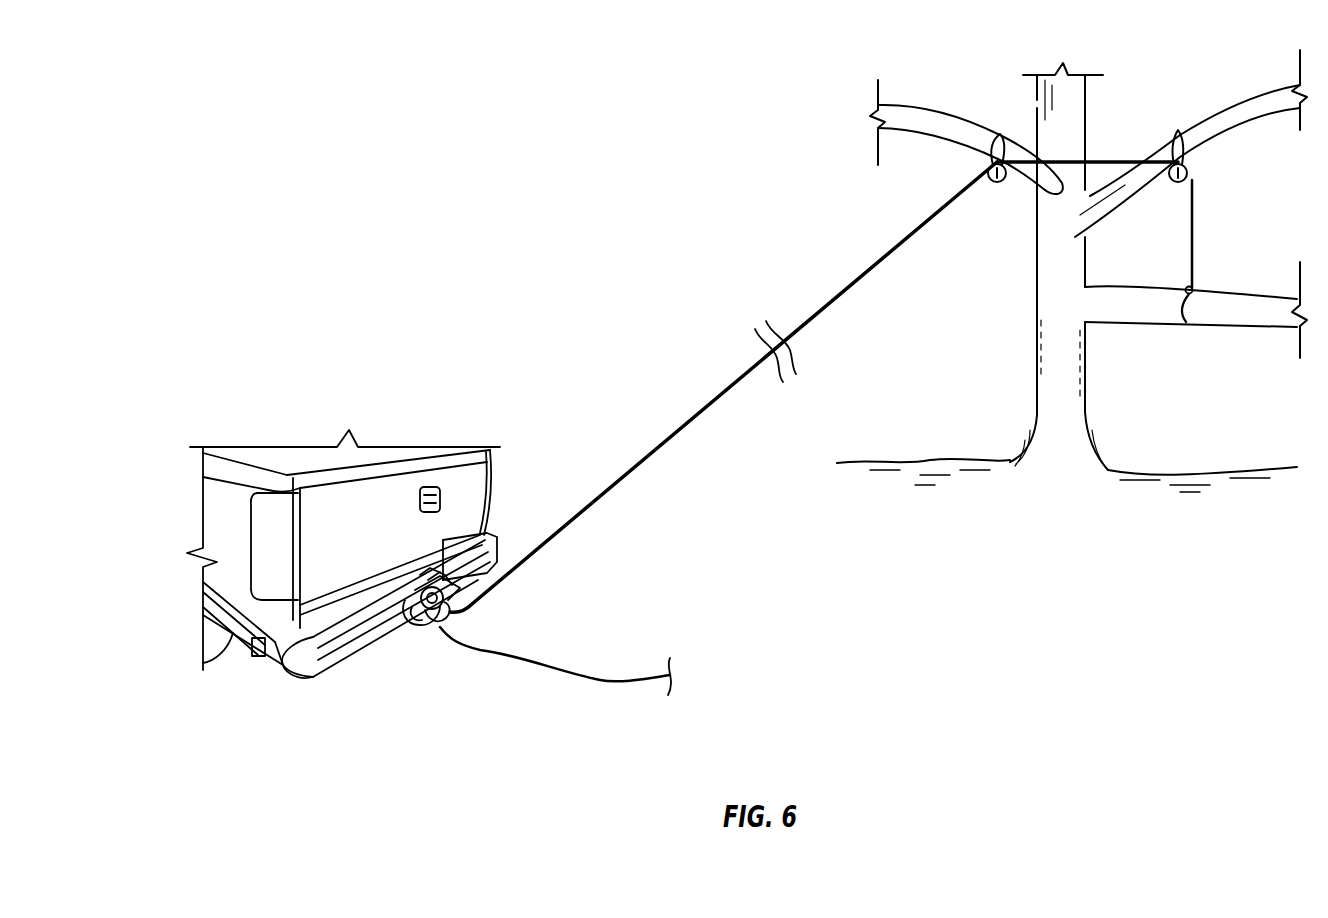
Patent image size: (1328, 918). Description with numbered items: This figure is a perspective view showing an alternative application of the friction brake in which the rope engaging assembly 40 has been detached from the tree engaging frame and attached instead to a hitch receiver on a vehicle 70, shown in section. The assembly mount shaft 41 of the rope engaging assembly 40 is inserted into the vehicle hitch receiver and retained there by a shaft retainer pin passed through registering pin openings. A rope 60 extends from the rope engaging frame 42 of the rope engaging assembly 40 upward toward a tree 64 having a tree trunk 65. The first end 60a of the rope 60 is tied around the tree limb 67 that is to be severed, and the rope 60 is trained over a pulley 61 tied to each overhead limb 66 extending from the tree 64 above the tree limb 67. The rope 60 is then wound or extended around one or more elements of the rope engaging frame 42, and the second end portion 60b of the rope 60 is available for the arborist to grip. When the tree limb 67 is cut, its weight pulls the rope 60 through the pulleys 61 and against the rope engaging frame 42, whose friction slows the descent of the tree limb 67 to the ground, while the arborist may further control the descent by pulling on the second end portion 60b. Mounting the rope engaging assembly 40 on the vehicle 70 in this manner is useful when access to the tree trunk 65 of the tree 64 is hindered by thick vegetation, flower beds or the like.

The rope engaging assembly 40 is at (410, 645).
The assembly mount shaft 41 is at (435, 630).
The rope engaging frame 42 is at (423, 562).
The rope 60 is at (797, 335).
The first end of the rope 60a is at (1192, 287).
The second end portion of the rope 60b is at (628, 677).
The pulley 61 is at (999, 183).
The tree 64 is at (1038, 103).
The tree trunk 65 is at (1060, 395).
The overhead limb 66 is at (933, 128).
The tree limb 67 is at (1253, 310).
The vehicle 70 is at (472, 490).